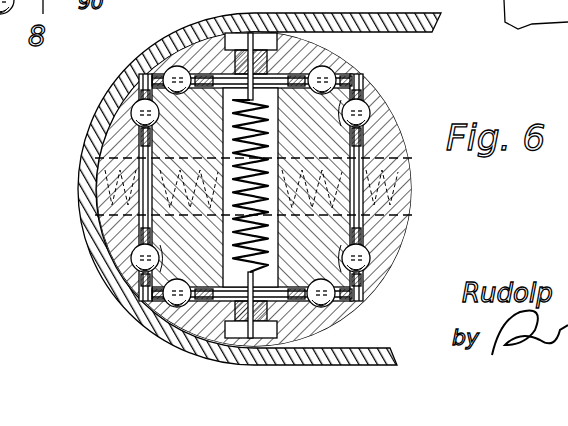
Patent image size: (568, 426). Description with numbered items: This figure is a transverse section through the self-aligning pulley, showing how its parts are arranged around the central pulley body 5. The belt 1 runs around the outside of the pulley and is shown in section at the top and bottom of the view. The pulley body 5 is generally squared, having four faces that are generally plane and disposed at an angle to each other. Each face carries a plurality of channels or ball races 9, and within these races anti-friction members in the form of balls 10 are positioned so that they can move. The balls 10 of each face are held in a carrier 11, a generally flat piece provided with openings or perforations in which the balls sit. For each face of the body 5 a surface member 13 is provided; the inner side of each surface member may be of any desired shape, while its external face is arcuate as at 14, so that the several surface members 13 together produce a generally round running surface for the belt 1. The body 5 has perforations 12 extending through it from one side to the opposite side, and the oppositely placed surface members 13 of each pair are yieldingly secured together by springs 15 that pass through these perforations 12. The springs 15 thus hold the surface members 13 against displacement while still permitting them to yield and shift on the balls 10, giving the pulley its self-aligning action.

The belt 1 is at (418, 33).
The pulley body 5 is at (165, 144).
The ball race 9 is at (158, 257).
The ball 10 is at (176, 66).
The carrier 11 is at (128, 300).
The perforation 12 is at (93, 221).
The surface member 13 is at (158, 48).
The arcuate external face 14 is at (140, 273).
The spring 15 is at (268, 114).